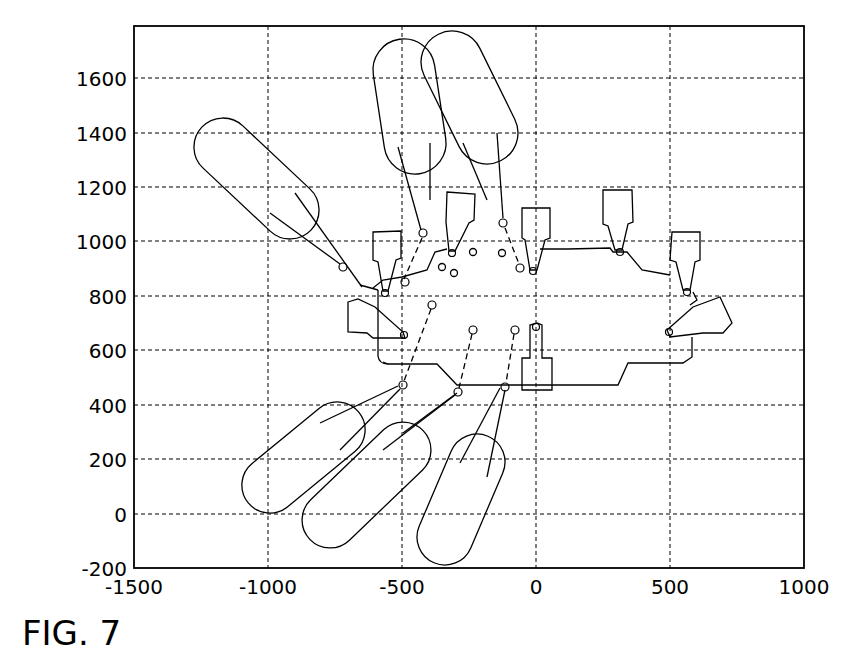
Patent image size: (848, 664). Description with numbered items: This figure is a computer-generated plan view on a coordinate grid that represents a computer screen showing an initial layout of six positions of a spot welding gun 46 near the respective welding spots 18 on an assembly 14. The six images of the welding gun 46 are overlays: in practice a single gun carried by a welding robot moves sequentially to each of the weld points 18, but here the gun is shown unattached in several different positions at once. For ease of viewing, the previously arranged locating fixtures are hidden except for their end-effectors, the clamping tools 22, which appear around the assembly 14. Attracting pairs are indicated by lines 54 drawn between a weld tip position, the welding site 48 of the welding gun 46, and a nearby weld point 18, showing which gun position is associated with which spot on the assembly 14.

The assembly 14 is at (688, 358).
The welding spots 18 is at (493, 300).
The clamping tools 22 is at (383, 238).
The welding gun 46 is at (380, 97).
The welding site 48 is at (343, 262).
The lines 54 is at (363, 290).